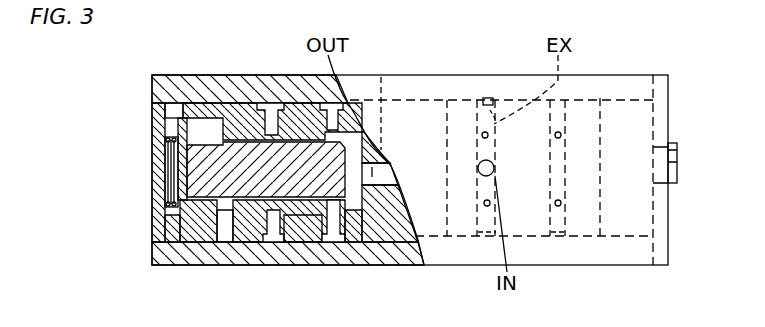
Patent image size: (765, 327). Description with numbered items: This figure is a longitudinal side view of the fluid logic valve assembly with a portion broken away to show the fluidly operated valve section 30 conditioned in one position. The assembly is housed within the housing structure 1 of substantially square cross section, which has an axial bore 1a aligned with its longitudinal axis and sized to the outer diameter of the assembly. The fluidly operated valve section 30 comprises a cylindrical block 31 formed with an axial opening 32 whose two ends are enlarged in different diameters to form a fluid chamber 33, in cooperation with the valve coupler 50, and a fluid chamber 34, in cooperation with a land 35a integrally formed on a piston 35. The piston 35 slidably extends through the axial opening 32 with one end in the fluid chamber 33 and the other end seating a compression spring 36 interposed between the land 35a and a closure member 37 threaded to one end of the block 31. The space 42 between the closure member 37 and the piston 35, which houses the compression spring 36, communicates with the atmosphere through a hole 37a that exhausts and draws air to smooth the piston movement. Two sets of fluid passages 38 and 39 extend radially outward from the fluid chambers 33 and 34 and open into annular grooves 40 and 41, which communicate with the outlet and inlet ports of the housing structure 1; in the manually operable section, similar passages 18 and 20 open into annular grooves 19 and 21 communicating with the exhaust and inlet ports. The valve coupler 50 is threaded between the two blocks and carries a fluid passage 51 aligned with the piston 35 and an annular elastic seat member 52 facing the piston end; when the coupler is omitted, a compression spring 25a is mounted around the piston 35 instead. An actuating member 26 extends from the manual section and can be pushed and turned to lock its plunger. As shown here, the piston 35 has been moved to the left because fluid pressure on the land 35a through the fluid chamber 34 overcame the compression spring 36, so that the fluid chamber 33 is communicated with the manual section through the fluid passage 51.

The housing structure 1 is at (640, 95).
The axial bore 1a is at (199, 100).
The passages 18 is at (560, 133).
The annular groove 19 is at (560, 117).
The passages 20 is at (491, 97).
The annular groove 21 is at (520, 103).
The compression spring 25a is at (412, 245).
The actuating member 26 is at (676, 150).
The fluidly operated valve section 30 is at (250, 103).
The cylindrical block 31 is at (213, 110).
The axial opening 32 is at (316, 243).
The fluid chamber 33 is at (361, 243).
The fluid chamber 34 is at (246, 243).
The piston 35 is at (260, 160).
The land 35a is at (215, 243).
The compression spring 36 is at (180, 243).
The closure member 37 is at (158, 227).
The hole 37a is at (158, 173).
The fluid passages 38 is at (310, 103).
The fluid passages 39 is at (299, 243).
The annular groove 40 is at (340, 243).
The annular groove 41 is at (276, 243).
The space 42 is at (196, 103).
The valve coupler 50 is at (435, 112).
The fluid passage 51 is at (386, 243).
The elastic seat member 52 is at (377, 100).